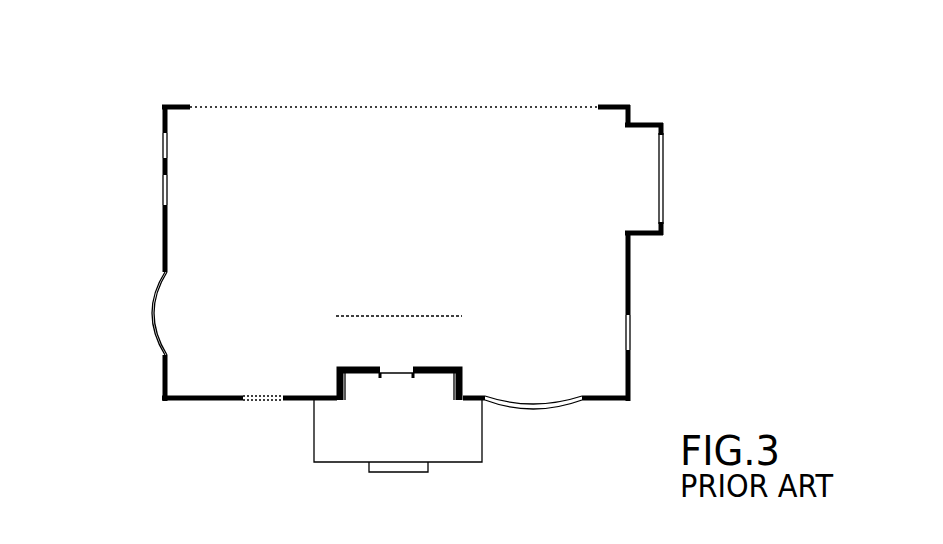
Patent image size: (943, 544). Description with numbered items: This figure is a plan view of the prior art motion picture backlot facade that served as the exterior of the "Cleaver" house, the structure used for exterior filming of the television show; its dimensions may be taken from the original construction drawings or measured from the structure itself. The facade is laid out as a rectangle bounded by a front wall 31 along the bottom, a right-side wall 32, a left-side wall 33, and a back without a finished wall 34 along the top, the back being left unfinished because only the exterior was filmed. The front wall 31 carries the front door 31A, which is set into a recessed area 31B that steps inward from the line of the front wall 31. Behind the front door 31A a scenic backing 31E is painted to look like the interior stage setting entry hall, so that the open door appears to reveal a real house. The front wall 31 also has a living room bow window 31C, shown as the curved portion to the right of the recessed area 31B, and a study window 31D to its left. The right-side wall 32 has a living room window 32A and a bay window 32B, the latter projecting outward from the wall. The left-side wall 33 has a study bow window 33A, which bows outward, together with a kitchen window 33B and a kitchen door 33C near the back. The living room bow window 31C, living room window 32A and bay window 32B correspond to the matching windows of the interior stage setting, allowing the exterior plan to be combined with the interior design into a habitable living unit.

The front wall 31 is at (630, 415).
The front door 31A is at (400, 375).
The recessed area 31B is at (455, 406).
The living room bow window 31C is at (533, 410).
The study window 31D is at (262, 401).
The scenic backing 31E is at (400, 320).
The right-side wall 32 is at (668, 103).
The living room window 32A is at (631, 333).
The bay window 32B is at (667, 178).
The left-side wall 33 is at (145, 105).
The study bow window 33A is at (154, 313).
The kitchen window 33B is at (162, 192).
The kitchen door 33C is at (162, 145).
The back without a finished wall 34 is at (630, 86).